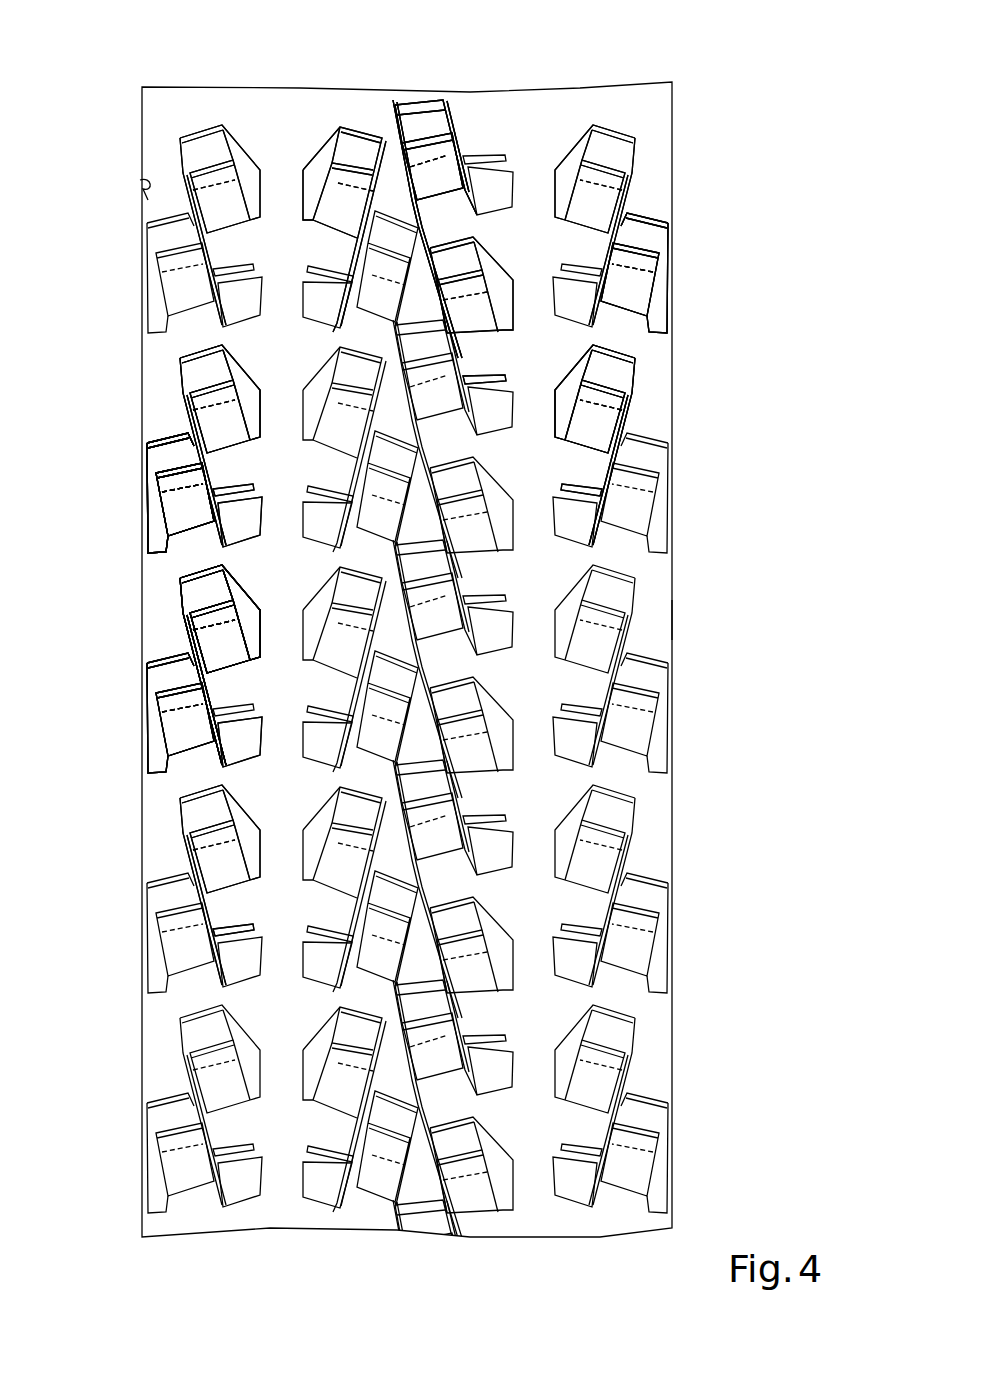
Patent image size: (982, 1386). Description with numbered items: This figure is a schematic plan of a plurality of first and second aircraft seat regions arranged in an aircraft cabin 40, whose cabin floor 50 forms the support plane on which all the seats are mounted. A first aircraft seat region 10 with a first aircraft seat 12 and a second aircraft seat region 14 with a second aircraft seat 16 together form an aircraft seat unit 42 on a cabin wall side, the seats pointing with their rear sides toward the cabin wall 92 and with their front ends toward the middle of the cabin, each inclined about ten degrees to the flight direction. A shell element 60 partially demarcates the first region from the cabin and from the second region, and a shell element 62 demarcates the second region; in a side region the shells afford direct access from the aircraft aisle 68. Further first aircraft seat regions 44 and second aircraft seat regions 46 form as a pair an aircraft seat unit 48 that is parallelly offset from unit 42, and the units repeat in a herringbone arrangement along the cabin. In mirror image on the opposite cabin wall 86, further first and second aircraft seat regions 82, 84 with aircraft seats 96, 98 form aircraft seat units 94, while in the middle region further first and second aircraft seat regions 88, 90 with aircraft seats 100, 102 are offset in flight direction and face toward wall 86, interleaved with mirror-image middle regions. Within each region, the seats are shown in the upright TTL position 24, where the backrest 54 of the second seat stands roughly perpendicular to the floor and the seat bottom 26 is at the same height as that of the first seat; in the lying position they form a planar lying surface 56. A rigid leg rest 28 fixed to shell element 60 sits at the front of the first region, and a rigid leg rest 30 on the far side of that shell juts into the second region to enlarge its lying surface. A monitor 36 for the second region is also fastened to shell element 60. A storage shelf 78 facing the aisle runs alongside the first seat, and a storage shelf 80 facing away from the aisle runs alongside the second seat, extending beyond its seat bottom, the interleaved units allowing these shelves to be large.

The first aircraft seat region 10 is at (231, 689).
The first aircraft seat 12 is at (183, 663).
The second aircraft seat region 14 is at (178, 562).
The second aircraft seat 16 is at (182, 507).
The TTL position 24 is at (235, 650).
The seat bottom 26 is at (195, 513).
The rigid leg rest 28 is at (233, 747).
The rigid leg rest 30 is at (237, 587).
The monitor 36 is at (183, 723).
The aircraft cabin 40 is at (142, 150).
The aircraft seat unit 42 is at (163, 428).
The further first aircraft seat region 44 is at (223, 925).
The further second aircraft seat region 46 is at (177, 788).
The aircraft seat unit 48 is at (168, 652).
The cabin floor 50 is at (495, 143).
The backrest 54 is at (203, 600).
The lying surface 56 is at (167, 465).
The shell element 60 is at (190, 622).
The shell element 62 is at (150, 455).
The aircraft aisle 68 is at (283, 157).
The storage shelf 78 is at (250, 623).
The storage shelf 80 is at (157, 537).
The further first aircraft seat region 82 is at (583, 468).
The further second aircraft seat region 84 is at (630, 348).
The opposite cabin wall 86 is at (672, 605).
The further first aircraft seat region 88 is at (497, 353).
The further second aircraft seat region 90 is at (475, 213).
The cabin wall 92 is at (140, 180).
The aircraft seat unit 94 is at (648, 202).
The aircraft seat 96 is at (593, 420).
The aircraft seat 98 is at (630, 292).
The aircraft seat 100 is at (412, 200).
The aircraft seat 102 is at (440, 177).